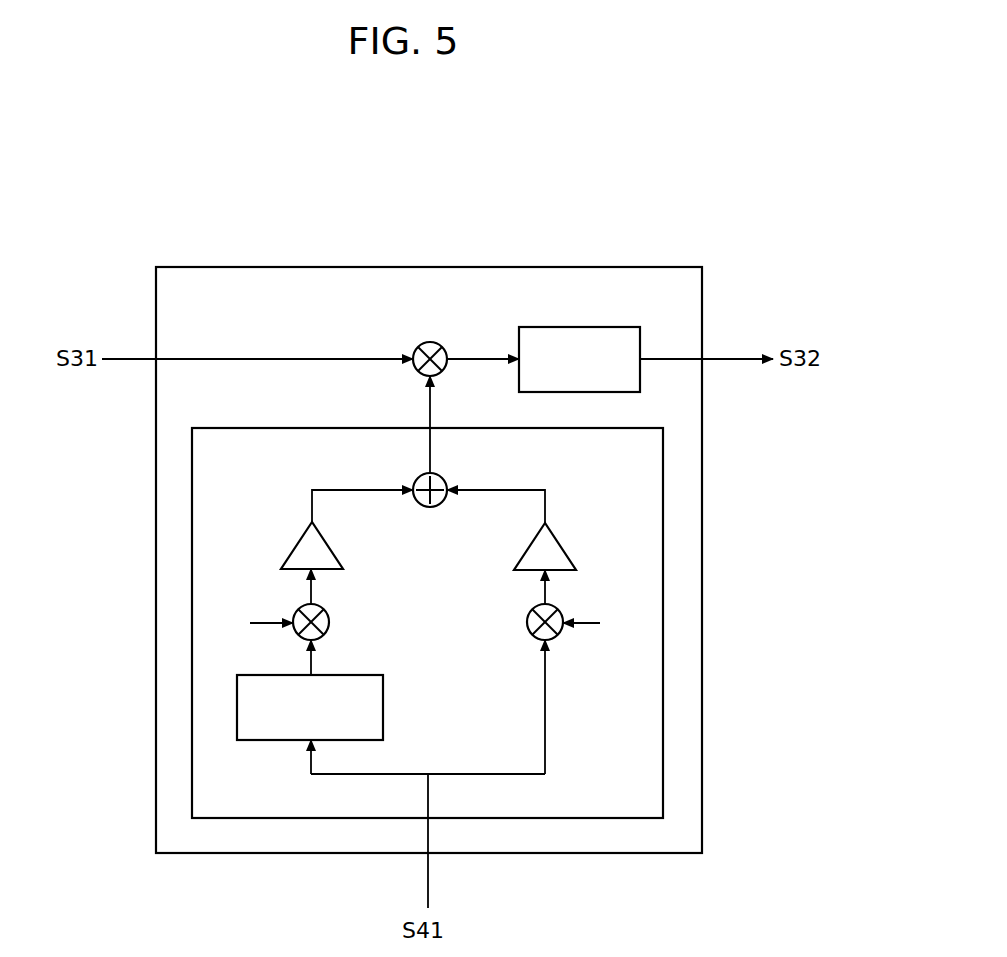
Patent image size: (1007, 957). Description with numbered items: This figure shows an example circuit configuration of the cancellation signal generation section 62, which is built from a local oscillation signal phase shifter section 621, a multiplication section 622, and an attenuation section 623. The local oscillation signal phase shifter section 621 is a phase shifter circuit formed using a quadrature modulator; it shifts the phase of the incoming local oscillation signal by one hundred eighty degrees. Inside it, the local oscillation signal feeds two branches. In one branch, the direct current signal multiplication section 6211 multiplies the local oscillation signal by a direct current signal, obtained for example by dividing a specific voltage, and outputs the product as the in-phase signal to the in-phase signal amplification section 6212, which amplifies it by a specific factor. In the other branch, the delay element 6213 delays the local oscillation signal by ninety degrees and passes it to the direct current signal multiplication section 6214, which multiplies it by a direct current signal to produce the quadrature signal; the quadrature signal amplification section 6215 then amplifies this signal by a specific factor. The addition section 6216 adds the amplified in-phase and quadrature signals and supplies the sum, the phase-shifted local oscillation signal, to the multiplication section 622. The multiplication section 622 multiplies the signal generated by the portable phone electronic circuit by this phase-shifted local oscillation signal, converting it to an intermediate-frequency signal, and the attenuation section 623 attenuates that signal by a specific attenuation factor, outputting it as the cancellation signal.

The cancellation signal generation section 62 is at (250, 267).
The local oscillation signal phase shifter section 621 is at (663, 492).
The multiplication section 622 is at (440, 345).
The attenuation section 623 is at (580, 327).
The direct current signal multiplication section 6211 is at (558, 633).
The in-phase signal amplification section 6212 is at (567, 545).
The delay element 6213 is at (237, 707).
The direct current signal multiplication section 6214 is at (295, 633).
The quadrature signal amplification section 6215 is at (290, 547).
The addition section 6216 is at (605, 467).